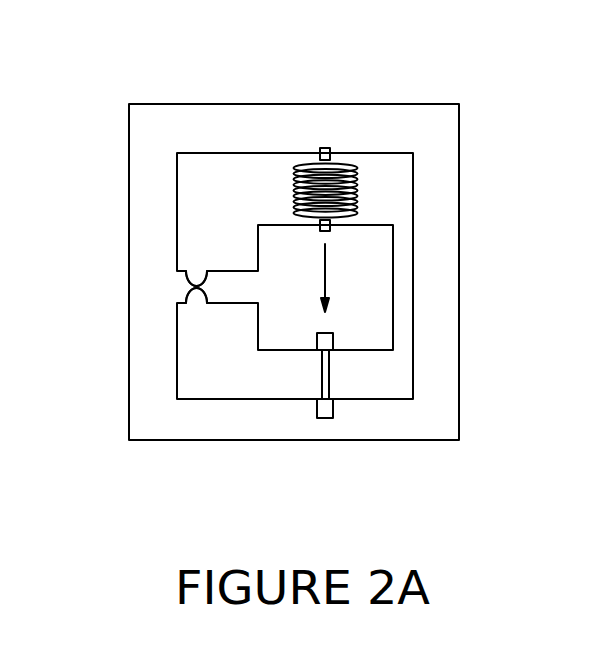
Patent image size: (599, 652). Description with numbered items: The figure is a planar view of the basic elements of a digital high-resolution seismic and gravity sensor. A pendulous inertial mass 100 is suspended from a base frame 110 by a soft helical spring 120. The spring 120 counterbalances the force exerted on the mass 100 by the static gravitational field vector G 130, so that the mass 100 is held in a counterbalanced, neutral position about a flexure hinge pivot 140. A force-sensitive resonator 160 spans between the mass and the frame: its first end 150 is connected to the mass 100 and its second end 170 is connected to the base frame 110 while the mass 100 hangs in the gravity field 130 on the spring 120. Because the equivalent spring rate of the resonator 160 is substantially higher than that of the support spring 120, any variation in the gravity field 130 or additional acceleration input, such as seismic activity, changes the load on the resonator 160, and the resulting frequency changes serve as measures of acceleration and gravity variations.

The pendulous inertial mass 100 is at (393, 316).
The base frame 110 is at (217, 105).
The soft helical spring 120 is at (356, 169).
The gravitational field vector G 130 is at (325, 247).
The flexure hinge pivot 140 is at (207, 285).
The first end of force-sensitive resonator 150 is at (333, 338).
The force-sensitive resonator 160 is at (322, 373).
The second end of force-sensitive resonator 170 is at (324, 418).